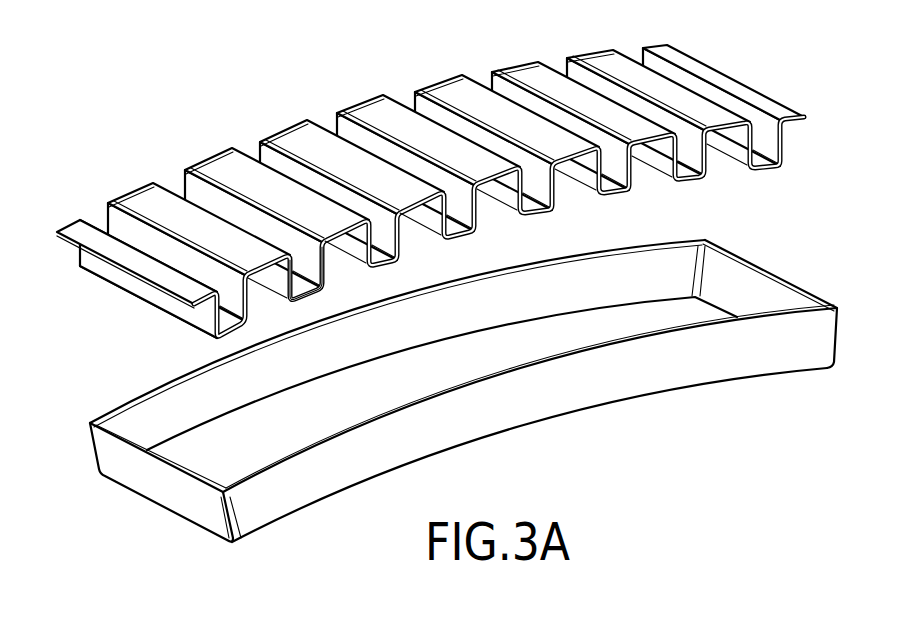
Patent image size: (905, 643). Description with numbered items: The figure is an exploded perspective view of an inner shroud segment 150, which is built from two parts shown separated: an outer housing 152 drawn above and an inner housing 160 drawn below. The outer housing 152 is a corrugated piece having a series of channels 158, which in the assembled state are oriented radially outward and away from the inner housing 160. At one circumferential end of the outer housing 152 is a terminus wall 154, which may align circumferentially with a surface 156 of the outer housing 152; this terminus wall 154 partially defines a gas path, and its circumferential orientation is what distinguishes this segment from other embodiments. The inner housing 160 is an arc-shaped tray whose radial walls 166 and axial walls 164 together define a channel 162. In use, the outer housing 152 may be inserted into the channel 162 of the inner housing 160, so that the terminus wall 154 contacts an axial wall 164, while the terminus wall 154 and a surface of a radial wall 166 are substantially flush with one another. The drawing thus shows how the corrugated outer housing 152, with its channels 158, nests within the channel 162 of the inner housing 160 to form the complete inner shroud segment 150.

The inner shroud segment 150 is at (419, 180).
The outer housing 152 is at (708, 72).
The terminus wall 154 is at (77, 228).
The surface 156 is at (142, 198).
The channels 158 is at (312, 292).
The inner housing 160 is at (444, 401).
The channel 162 is at (185, 447).
The axial walls 164 is at (115, 472).
The radial walls 166 is at (543, 280).